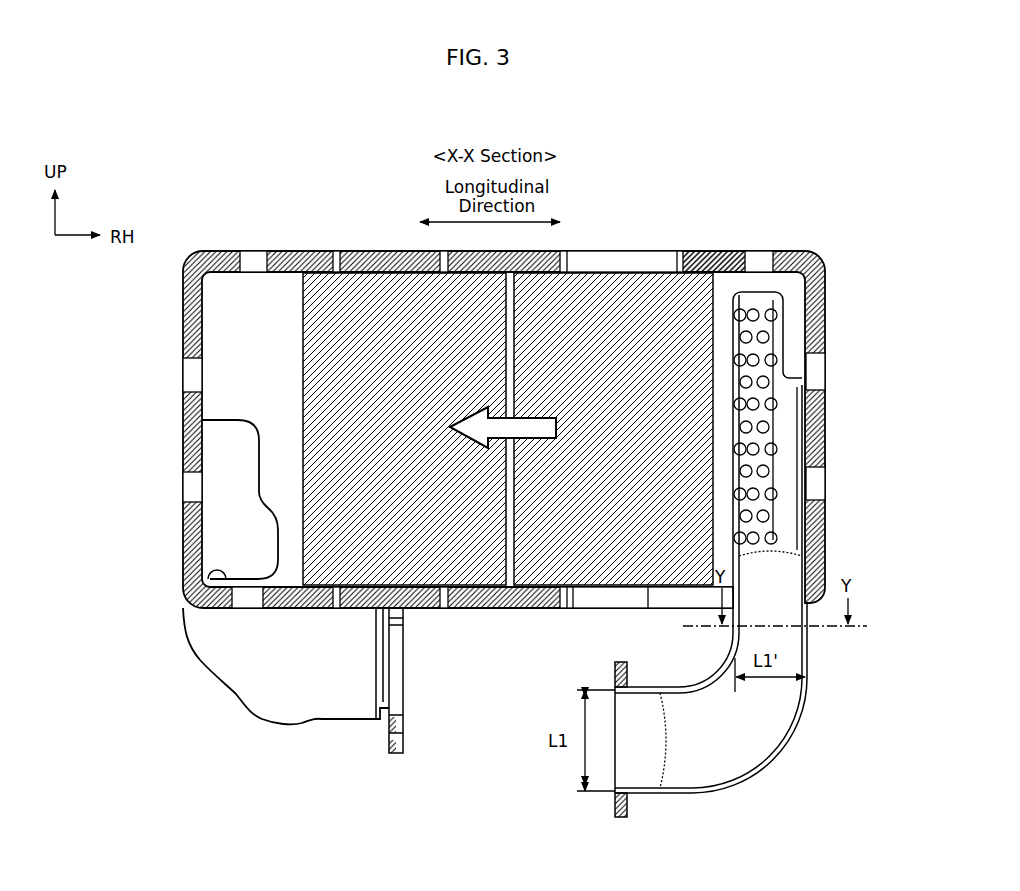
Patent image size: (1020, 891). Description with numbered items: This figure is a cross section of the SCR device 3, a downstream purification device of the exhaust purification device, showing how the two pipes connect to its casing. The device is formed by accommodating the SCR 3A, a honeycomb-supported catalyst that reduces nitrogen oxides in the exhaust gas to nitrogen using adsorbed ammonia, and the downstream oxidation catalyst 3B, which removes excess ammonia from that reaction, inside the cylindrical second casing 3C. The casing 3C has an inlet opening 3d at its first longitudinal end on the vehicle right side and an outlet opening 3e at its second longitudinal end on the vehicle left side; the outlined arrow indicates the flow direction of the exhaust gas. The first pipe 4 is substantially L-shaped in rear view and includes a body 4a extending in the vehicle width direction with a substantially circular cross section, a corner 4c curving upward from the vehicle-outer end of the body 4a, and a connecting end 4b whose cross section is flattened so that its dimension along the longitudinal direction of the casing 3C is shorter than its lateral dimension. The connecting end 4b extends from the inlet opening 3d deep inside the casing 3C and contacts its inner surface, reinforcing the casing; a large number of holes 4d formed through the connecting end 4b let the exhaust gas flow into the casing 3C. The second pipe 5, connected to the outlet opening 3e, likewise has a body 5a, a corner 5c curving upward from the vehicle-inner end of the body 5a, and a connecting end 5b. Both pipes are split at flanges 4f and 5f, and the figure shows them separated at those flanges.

The SCR device 3 is at (238, 242).
The SCR 3A is at (610, 275).
The downstream oxidation catalyst 3B is at (352, 275).
The second casing 3C is at (712, 255).
The inlet opening 3d is at (790, 578).
The outlet opening 3e is at (194, 588).
The first pipe 4 is at (742, 578).
The body 4a is at (657, 790).
The connecting end 4b is at (806, 490).
The corner 4c is at (766, 757).
The holes 4d is at (774, 407).
The flange 4f is at (620, 820).
The second pipe 5 is at (284, 708).
The body 5a is at (318, 719).
The connecting end 5b is at (212, 520).
The corner 5c is at (229, 688).
The flanges 5f is at (397, 756).